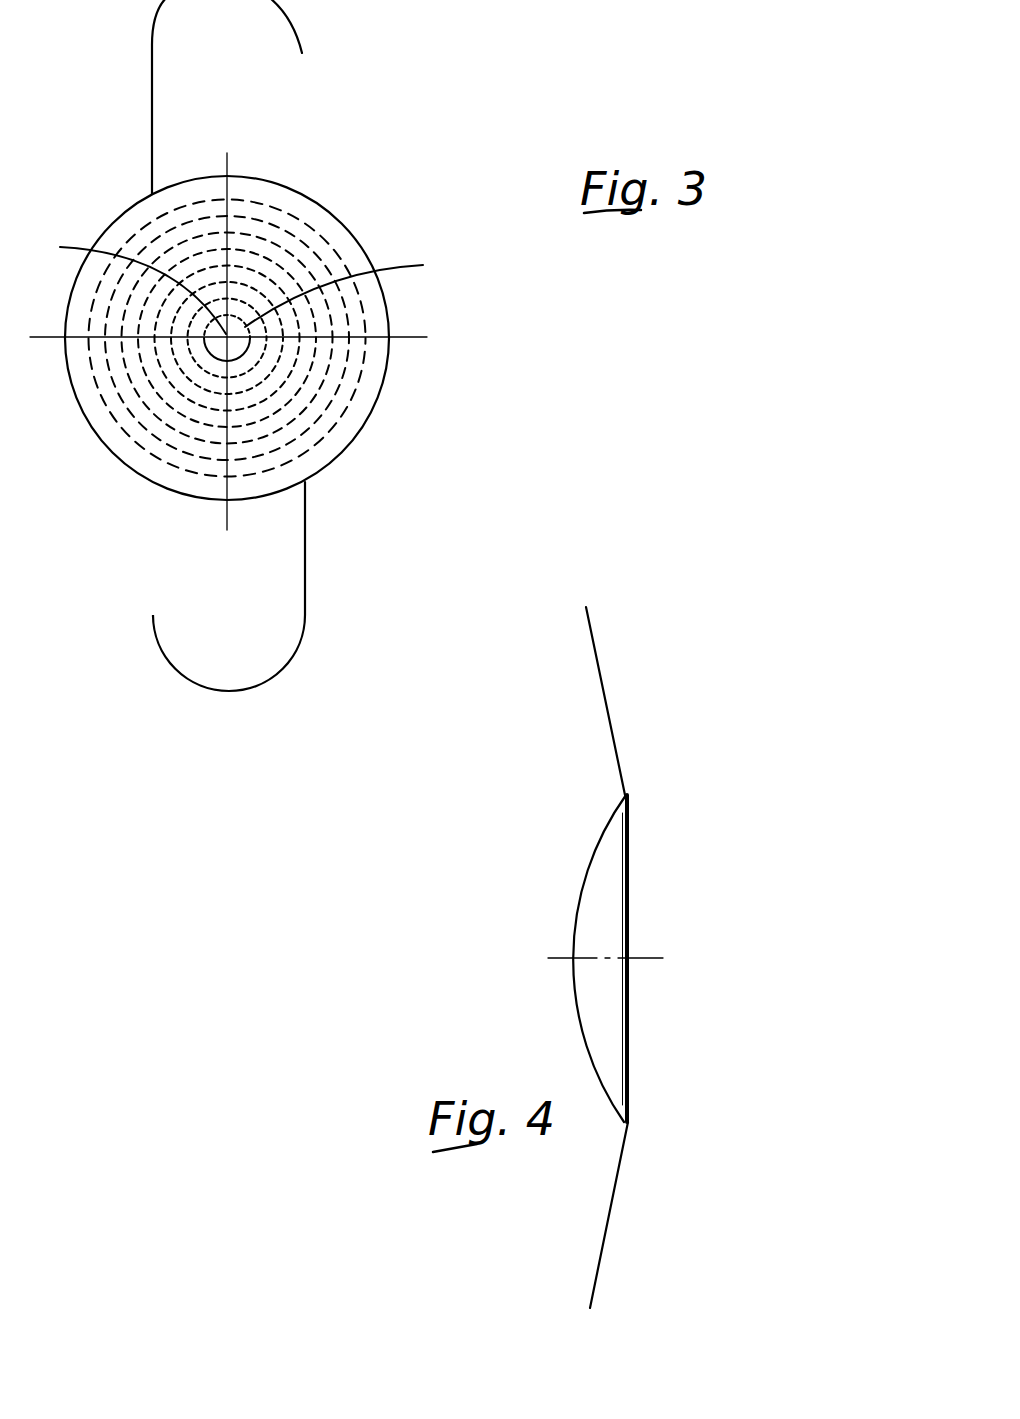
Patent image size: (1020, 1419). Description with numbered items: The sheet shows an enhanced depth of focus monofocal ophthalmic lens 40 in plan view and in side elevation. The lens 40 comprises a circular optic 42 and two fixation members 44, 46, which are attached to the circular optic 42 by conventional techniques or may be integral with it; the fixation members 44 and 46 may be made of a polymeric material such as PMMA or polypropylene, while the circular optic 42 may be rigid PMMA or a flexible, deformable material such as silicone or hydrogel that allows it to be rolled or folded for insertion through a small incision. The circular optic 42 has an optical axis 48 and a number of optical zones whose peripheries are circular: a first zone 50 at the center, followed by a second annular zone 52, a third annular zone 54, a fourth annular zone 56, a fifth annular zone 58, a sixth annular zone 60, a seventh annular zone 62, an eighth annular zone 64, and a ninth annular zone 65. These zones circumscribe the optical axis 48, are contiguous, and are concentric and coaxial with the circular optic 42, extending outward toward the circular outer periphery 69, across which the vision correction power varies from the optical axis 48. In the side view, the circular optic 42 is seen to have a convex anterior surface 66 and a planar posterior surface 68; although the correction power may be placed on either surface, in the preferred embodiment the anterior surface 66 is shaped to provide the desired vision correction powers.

In FIG. 3, the enhanced depth of focus monofocal ophthalmic lens 40 is at (378, 141).
In FIG. 4, the enhanced depth of focus monofocal ophthalmic lens 40 is at (683, 789).
In FIG. 3, the circular optic 42 is at (365, 230).
In FIG. 4, the circular optic 42 is at (638, 896).
In FIG. 3, the fixation member 44 is at (302, 42).
In FIG. 4, the fixation member 44 is at (602, 697).
In FIG. 3, the fixation member 46 is at (307, 619).
In FIG. 4, the fixation member 46 is at (603, 1250).
In FIG. 3, the optical axis 48 is at (125, 280).
In FIG. 3, the first zone 50 is at (355, 288).
In FIG. 3, the second annular zone 52 is at (258, 350).
In FIG. 3, the third annular zone 54 is at (267, 367).
In FIG. 3, the fourth annular zone 56 is at (265, 397).
In FIG. 3, the fifth annular zone 58 is at (152, 378).
In FIG. 3, the sixth annular zone 60 is at (152, 410).
In FIG. 3, the seventh annular zone 62 is at (168, 443).
In FIG. 3, the eighth annular zone 64 is at (190, 470).
In FIG. 3, the ninth annular zone 65 is at (243, 490).
In FIG. 4, the convex anterior surface 66 is at (585, 872).
In FIG. 4, the planar posterior surface 68 is at (628, 1027).
In FIG. 3, the circular outer periphery 69 is at (137, 203).